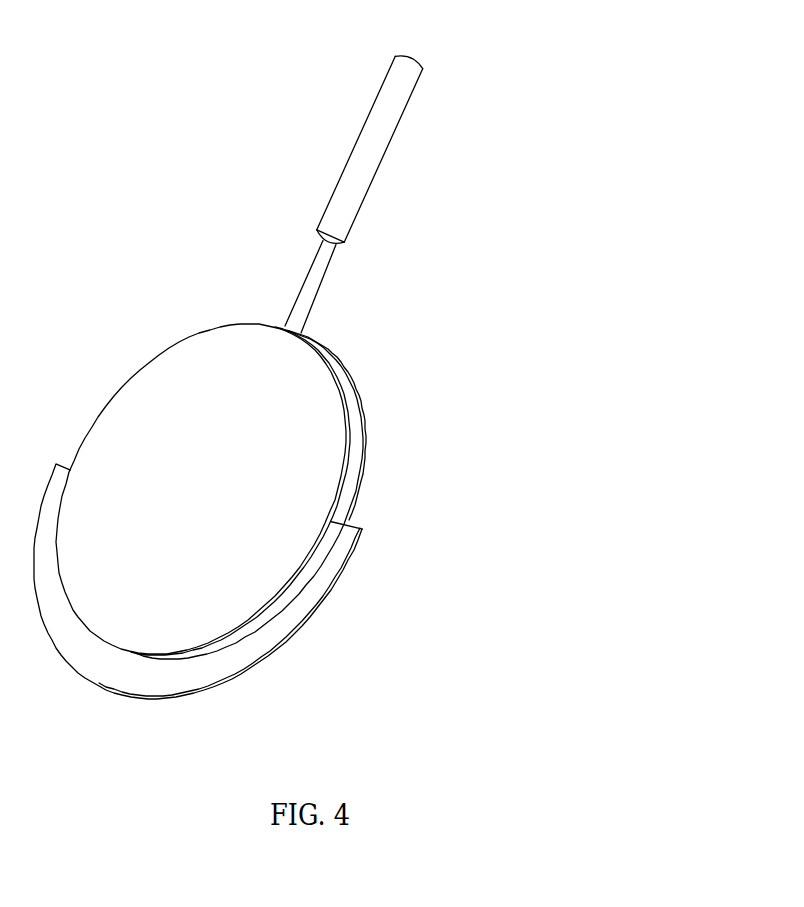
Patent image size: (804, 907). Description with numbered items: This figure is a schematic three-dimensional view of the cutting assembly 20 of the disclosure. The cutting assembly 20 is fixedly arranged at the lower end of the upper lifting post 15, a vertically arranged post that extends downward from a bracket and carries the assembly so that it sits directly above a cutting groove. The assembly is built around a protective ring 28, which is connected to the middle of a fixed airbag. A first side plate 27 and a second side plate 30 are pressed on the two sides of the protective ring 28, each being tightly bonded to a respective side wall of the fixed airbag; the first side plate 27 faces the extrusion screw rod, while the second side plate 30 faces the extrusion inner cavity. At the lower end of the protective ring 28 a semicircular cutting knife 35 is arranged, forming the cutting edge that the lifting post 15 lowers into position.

The upper lifting post 15 is at (363, 160).
The cutting assembly 20 is at (254, 495).
The first side plate 27 is at (207, 413).
The protective ring 28 is at (357, 437).
The second side plate 30 is at (370, 467).
The semicircular cutting knife 35 is at (295, 610).